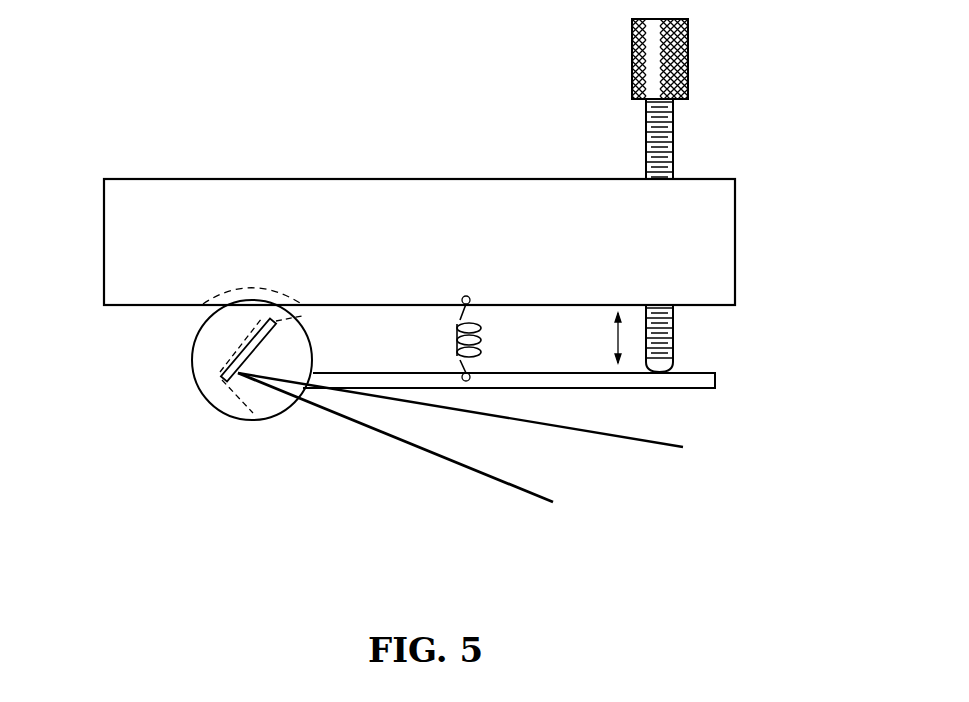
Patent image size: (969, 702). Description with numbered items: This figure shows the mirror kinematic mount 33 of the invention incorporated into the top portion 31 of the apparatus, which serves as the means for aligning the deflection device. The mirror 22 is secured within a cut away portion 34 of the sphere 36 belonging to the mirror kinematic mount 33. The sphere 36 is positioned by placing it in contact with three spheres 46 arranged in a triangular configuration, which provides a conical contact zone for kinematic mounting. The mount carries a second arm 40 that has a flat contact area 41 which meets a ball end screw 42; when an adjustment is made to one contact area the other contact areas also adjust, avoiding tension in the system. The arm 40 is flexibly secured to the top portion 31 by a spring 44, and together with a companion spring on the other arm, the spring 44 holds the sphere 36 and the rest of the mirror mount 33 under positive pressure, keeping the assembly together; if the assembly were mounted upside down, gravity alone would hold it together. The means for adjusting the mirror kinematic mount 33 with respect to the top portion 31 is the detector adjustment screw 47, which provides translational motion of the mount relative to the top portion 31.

The top portion 31 is at (103, 220).
The detector adjustment screw 47 is at (673, 147).
The ball end screw 42 is at (672, 366).
The mirror kinematic mount 33 is at (718, 379).
The flat contact area 41 is at (653, 388).
The spring 44 is at (450, 325).
The spheres 46 is at (208, 297).
The sphere 36 is at (186, 354).
The mirror 22 is at (228, 378).
The cut away portion 34 is at (260, 398).
The second arm 40 is at (538, 388).